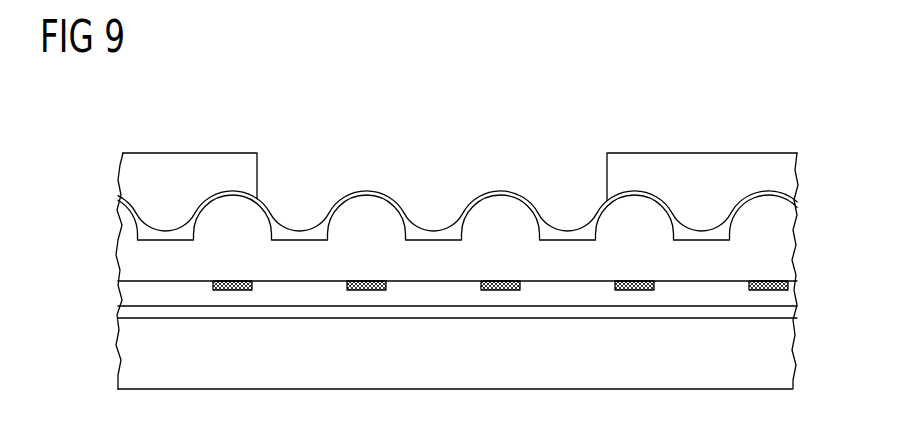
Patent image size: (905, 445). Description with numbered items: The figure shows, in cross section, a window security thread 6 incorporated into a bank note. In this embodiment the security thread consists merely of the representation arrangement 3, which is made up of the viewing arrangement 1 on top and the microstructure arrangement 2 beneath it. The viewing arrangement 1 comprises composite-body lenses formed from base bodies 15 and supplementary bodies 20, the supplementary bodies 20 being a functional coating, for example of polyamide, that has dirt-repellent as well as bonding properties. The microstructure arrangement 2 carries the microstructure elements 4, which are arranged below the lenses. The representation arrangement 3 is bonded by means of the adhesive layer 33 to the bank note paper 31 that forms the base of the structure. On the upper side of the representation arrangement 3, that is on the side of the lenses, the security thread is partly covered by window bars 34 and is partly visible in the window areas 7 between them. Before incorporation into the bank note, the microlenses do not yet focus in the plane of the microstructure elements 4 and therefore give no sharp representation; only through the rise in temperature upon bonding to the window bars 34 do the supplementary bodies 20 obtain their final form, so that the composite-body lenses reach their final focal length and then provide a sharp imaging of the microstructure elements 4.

The window security thread 6 is at (109, 129).
The window areas 7 is at (607, 143).
The window bars 34 is at (122, 174).
The supplementary bodies 20 is at (189, 231).
The base bodies 15 is at (655, 216).
The microstructure elements 4 is at (770, 279).
The viewing arrangement 1 is at (100, 200).
The microstructure arrangement 2 is at (100, 282).
The representation arrangement 3 is at (70, 200).
The adhesive layer 33 is at (786, 312).
The bank note paper 31 is at (782, 351).